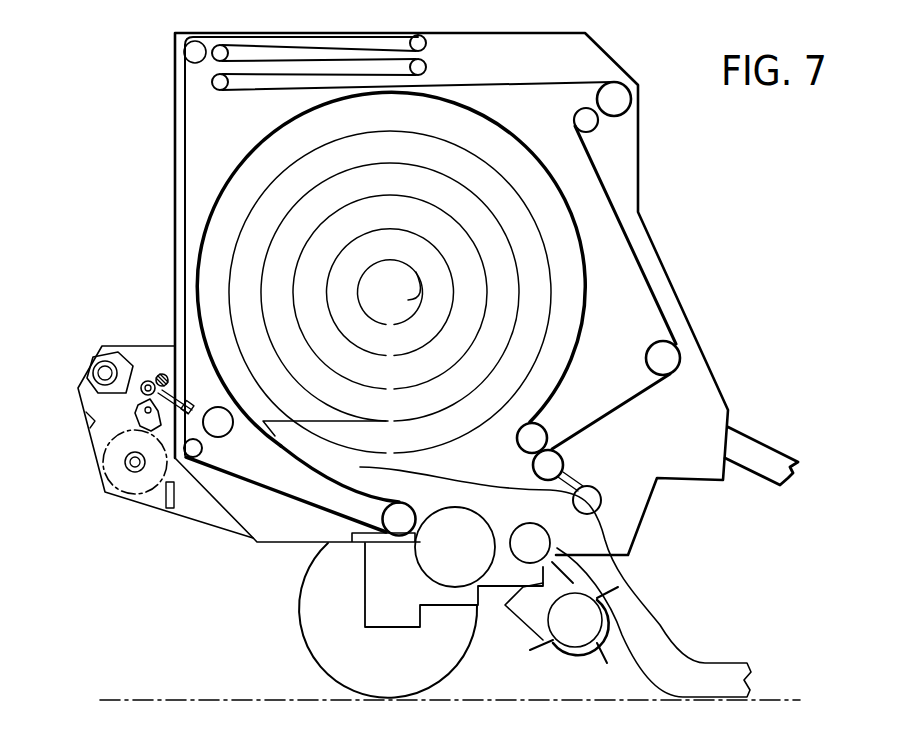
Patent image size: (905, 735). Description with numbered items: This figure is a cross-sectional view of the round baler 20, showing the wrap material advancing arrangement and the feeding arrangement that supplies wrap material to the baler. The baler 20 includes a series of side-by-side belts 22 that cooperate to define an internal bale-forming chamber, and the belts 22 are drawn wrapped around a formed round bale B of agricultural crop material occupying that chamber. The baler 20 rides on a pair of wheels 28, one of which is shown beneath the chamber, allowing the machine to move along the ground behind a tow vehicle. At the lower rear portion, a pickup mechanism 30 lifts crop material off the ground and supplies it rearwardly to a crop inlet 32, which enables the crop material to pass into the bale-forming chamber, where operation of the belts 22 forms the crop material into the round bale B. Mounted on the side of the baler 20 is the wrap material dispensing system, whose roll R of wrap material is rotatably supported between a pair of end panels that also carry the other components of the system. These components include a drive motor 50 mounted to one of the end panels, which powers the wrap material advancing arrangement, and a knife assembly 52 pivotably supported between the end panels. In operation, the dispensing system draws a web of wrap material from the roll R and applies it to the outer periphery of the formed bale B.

The round baler 20 is at (128, 95).
The side-by-side belts 22 is at (183, 153).
The bale B is at (222, 228).
The drive motor 50 is at (84, 366).
The knife assembly 52 is at (116, 414).
The roll of wrap material R is at (115, 472).
The wheels 28 is at (300, 643).
The pickup mechanism 30 is at (624, 630).
The crop inlet 32 is at (532, 499).